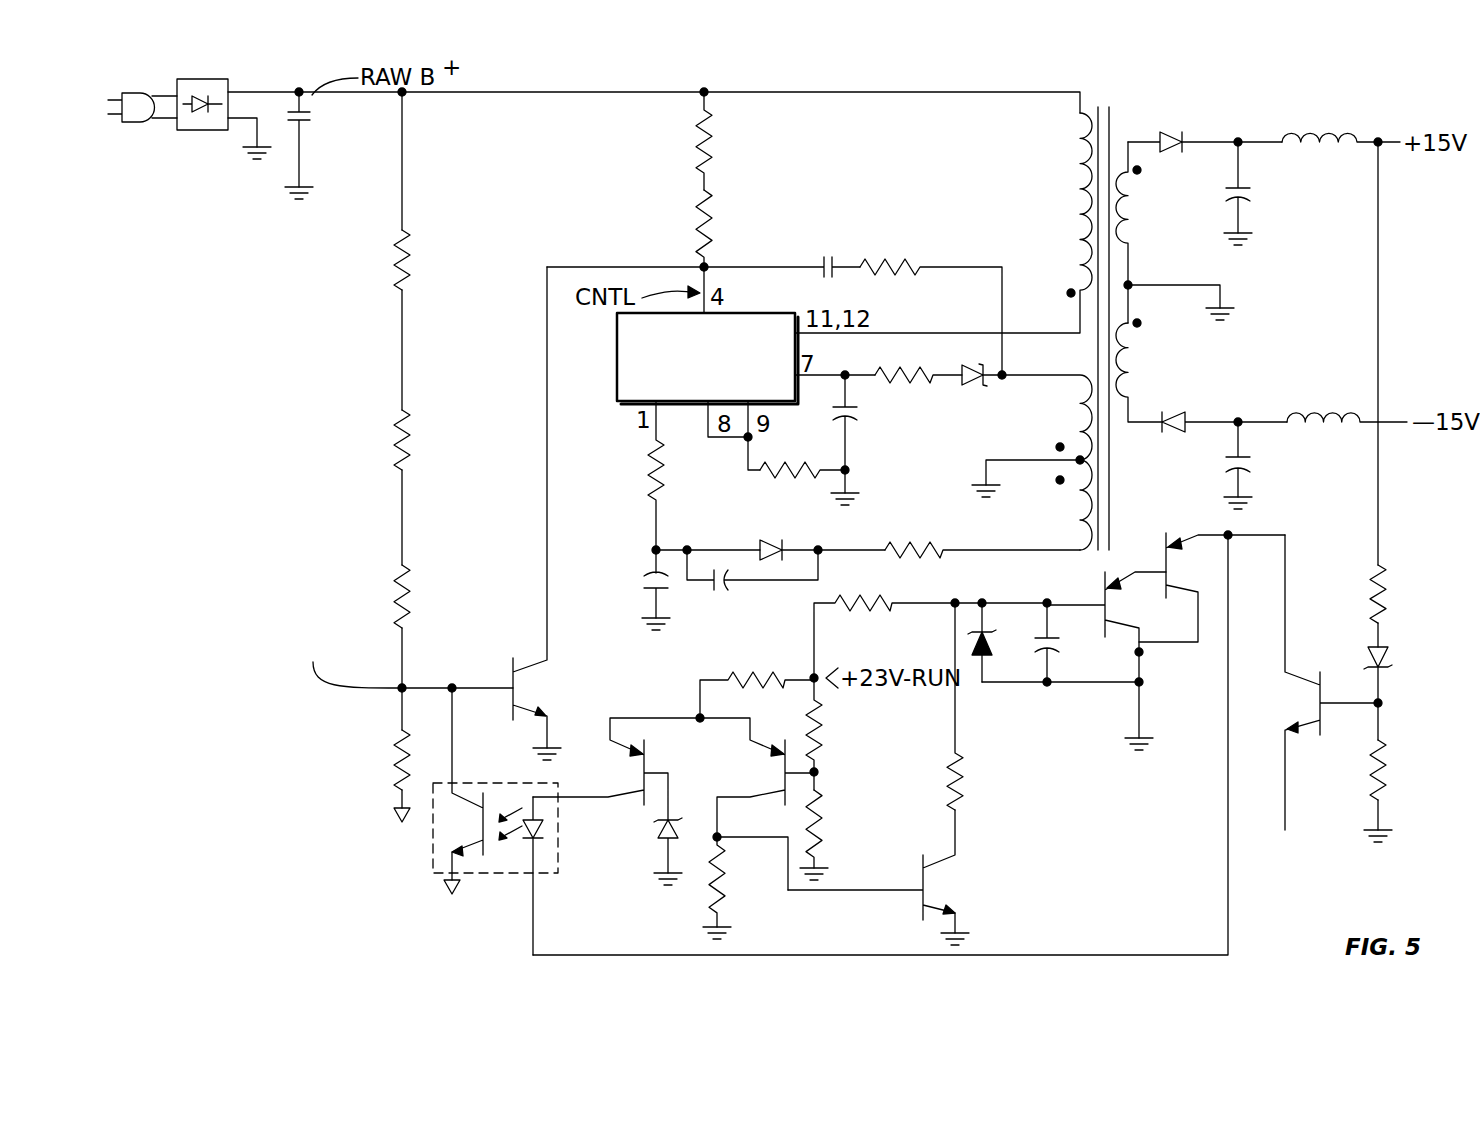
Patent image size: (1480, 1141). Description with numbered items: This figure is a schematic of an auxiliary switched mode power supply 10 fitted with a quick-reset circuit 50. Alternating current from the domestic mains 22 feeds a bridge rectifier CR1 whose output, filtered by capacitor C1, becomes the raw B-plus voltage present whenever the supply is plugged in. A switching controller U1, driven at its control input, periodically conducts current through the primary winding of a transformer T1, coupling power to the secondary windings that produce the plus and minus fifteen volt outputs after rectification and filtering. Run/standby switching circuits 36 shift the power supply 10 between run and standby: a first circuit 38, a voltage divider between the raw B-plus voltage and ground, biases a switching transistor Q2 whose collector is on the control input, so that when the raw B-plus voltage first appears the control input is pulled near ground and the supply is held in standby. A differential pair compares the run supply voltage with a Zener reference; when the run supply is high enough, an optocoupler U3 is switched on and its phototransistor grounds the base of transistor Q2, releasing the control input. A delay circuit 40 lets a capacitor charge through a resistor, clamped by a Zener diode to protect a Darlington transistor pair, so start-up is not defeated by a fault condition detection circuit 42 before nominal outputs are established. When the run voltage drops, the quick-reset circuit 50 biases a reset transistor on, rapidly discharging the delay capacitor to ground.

The switched mode power supply 10 is at (893, 148).
The domestic mains 22 is at (147, 122).
The run/standby switching circuits 36 is at (1282, 908).
The first circuit 38 is at (484, 663).
The delay circuit 40 is at (1091, 702).
The fault condition detection circuit 42 is at (1348, 652).
The quick-reset circuit 50 is at (996, 821).
The bridge rectifier CR1 is at (183, 130).
The capacitor C1 is at (337, 145).
The switching controller U1 is at (617, 362).
The transformer T1 is at (1014, 313).
The optocoupler U3 is at (478, 873).
The switching transistor Q2 is at (533, 676).